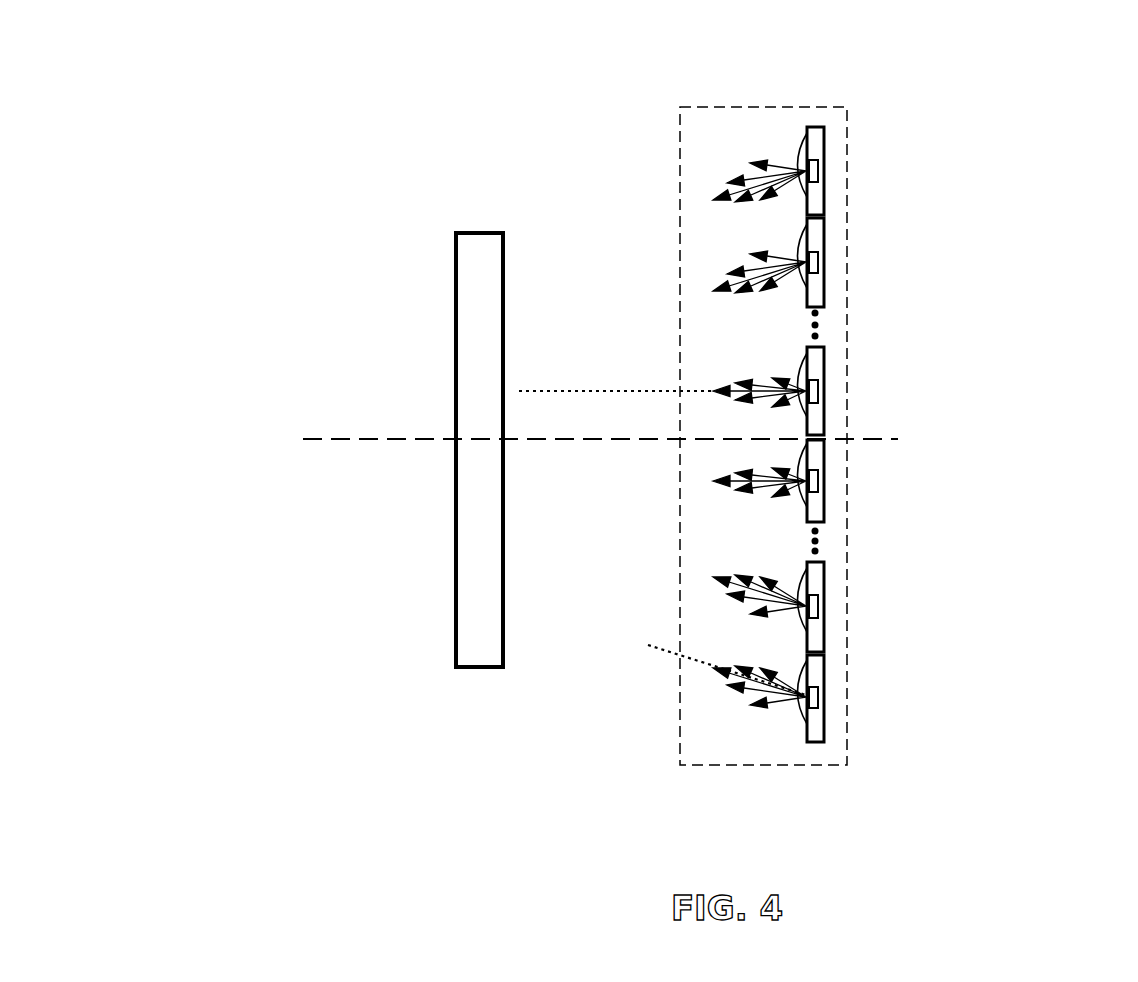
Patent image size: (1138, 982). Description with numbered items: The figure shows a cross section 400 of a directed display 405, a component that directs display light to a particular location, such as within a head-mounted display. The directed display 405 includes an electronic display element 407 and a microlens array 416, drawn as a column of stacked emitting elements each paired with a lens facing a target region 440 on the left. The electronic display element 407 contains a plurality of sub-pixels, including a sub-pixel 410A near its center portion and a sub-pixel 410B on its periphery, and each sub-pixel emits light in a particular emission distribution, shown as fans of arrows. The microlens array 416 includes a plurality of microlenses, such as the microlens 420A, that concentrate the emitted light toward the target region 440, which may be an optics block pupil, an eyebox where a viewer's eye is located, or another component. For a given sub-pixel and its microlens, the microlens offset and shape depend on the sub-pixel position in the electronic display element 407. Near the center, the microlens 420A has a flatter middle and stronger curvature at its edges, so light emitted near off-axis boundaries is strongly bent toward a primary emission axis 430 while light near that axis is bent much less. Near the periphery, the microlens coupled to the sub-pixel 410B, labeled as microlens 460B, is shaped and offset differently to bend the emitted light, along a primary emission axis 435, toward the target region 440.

The cross section 400 is at (153, 82).
The directed display 405 is at (818, 107).
The electronic display element 407 is at (913, 416).
The sub-pixel 410A is at (822, 360).
The sub-pixel 410B is at (820, 673).
The microlens array 416 is at (763, 439).
The microlens 420A is at (798, 372).
The primary emission axis 430 is at (550, 391).
The primary emission axis 435 is at (692, 662).
The target region 440 is at (452, 583).
The microlens 460B is at (797, 723).